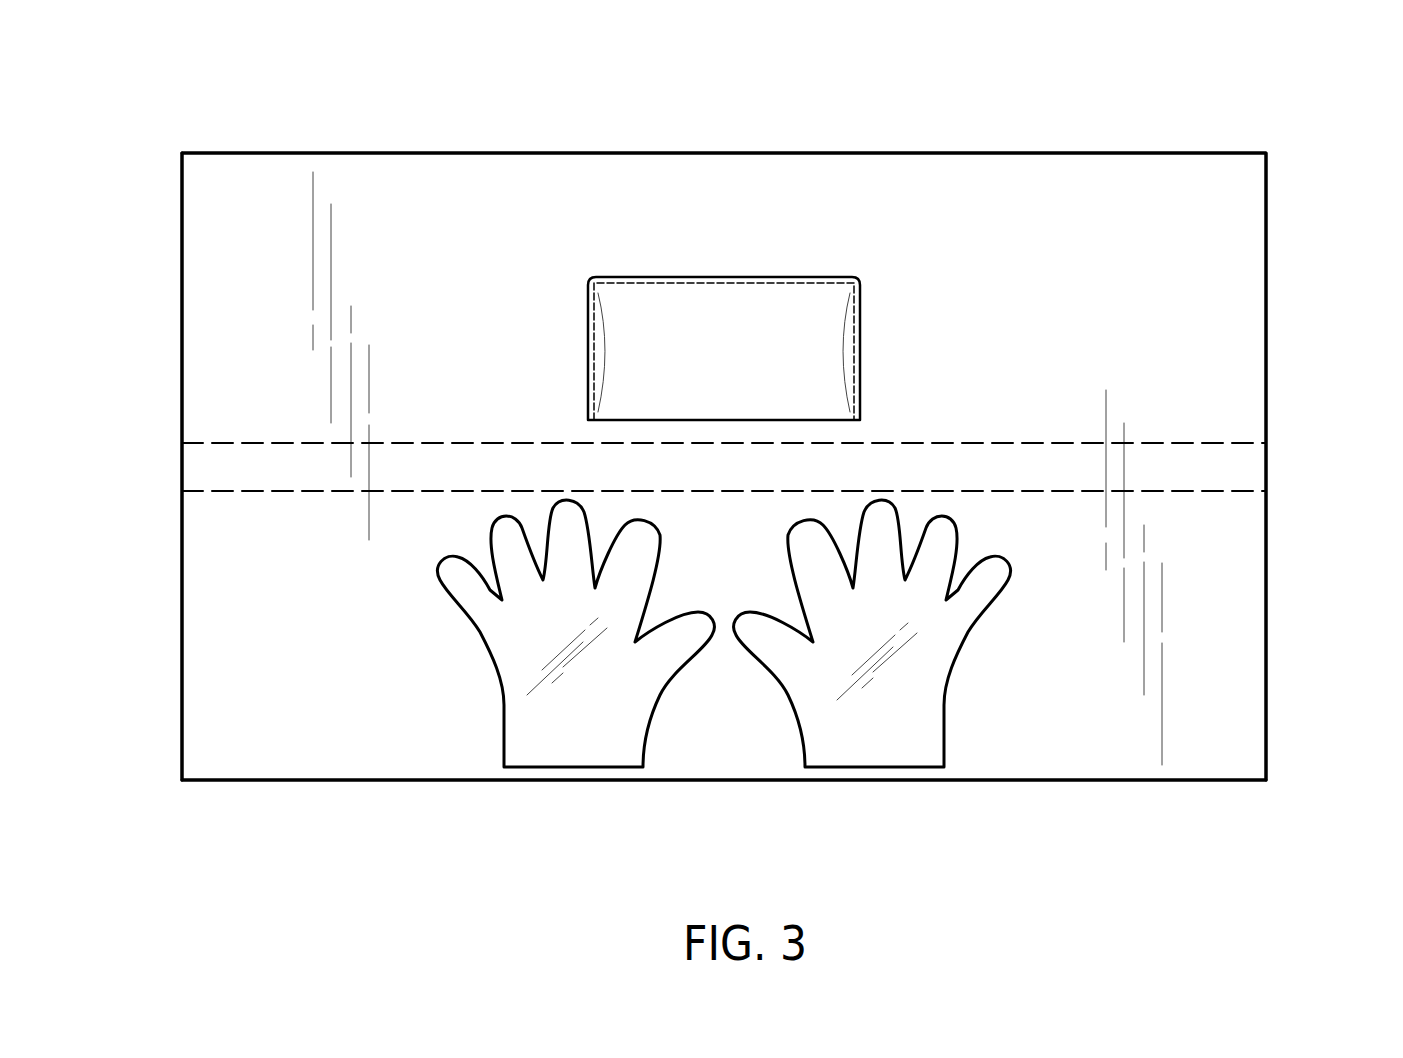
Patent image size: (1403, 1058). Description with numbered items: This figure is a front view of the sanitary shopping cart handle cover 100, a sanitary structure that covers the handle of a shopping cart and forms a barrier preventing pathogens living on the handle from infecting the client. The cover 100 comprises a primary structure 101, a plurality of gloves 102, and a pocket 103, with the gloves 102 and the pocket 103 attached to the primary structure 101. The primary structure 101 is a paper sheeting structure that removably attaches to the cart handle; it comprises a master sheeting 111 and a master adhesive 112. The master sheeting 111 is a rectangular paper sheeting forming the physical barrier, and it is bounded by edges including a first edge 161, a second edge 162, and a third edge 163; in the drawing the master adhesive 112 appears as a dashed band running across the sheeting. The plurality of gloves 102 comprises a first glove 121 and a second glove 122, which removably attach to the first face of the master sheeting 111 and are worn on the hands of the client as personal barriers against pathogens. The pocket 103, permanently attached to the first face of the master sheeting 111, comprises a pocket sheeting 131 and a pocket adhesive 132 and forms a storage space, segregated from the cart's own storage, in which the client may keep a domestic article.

The sanitary shopping cart handle cover 100 is at (1243, 94).
The primary structure 101 is at (1267, 177).
The plurality of gloves 102 is at (724, 700).
The pocket 103 is at (723, 233).
The master sheeting 111 is at (1267, 328).
The master adhesive 112 is at (1235, 475).
The first glove 121 is at (563, 743).
The second glove 122 is at (872, 674).
The pocket sheeting 131 is at (724, 311).
The pocket adhesive 132 is at (722, 277).
The first edge 161 is at (637, 153).
The second edge 162 is at (182, 343).
The third edge 163 is at (1082, 780).